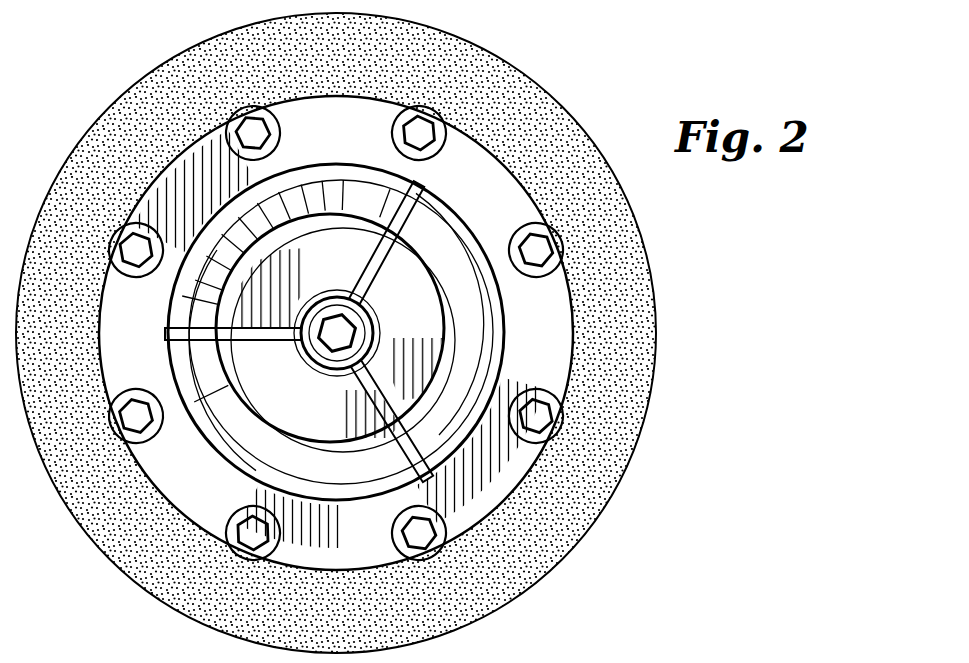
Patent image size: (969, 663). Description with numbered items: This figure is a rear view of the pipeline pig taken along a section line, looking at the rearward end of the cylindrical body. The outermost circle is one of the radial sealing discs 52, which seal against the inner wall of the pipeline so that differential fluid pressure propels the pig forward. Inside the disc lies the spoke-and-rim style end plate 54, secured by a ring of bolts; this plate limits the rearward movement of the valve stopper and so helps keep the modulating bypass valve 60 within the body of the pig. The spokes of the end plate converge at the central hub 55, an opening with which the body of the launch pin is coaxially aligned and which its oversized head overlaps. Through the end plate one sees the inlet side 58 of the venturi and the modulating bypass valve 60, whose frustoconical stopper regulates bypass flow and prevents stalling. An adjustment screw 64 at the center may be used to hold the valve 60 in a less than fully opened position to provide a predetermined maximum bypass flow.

The radial sealing discs 52 is at (553, 80).
The end plate 54 is at (548, 347).
The central hub 55 is at (338, 318).
The inlet side 58 is at (283, 331).
The modulating bypass valve 60 is at (400, 288).
The adjustment screw 64 is at (260, 399).